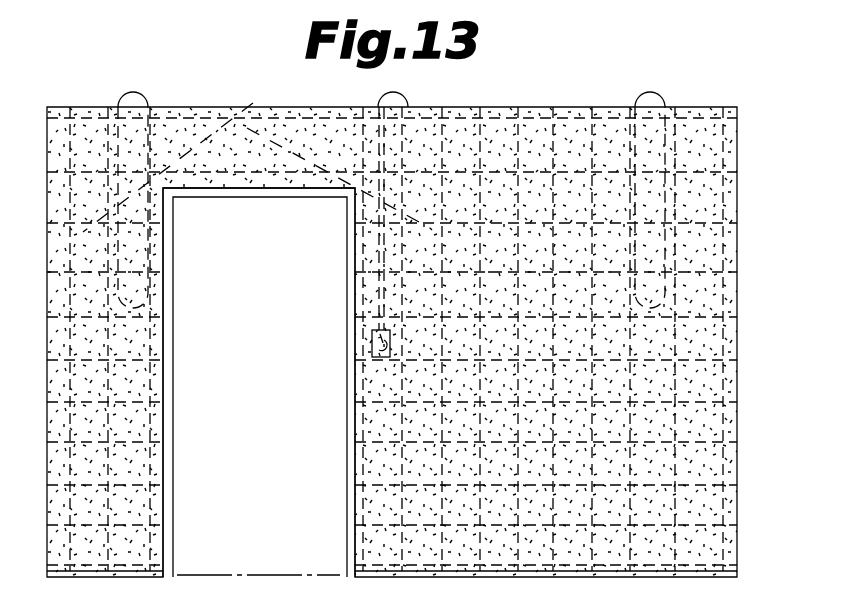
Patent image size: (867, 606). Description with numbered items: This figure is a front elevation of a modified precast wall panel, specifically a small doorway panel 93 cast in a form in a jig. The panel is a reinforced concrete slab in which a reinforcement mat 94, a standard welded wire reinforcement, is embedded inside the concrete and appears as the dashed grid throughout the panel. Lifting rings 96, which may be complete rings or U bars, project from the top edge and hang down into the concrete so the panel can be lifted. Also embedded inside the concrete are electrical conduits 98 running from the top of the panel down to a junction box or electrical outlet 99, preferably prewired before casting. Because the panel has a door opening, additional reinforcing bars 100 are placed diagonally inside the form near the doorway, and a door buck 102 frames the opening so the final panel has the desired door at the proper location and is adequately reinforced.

The doorway panel 93 is at (501, 122).
The reinforcement mat 94 is at (388, 405).
The lifting rings 96 is at (399, 95).
The electrical conduits 98 is at (375, 250).
The junction boxes or electrical outlets 99 is at (372, 340).
The additional reinforcing bars 100 is at (288, 98).
The door buck 102 is at (172, 305).